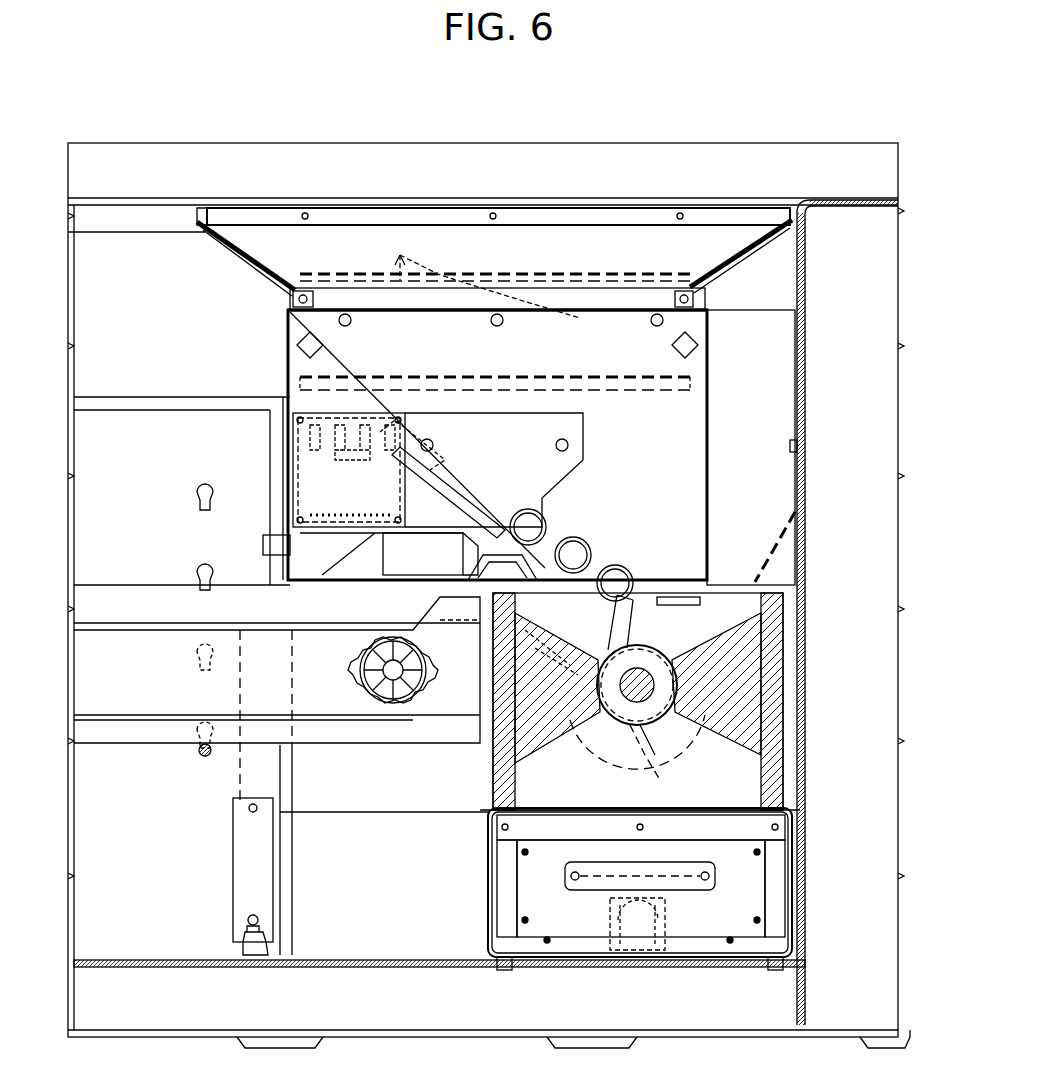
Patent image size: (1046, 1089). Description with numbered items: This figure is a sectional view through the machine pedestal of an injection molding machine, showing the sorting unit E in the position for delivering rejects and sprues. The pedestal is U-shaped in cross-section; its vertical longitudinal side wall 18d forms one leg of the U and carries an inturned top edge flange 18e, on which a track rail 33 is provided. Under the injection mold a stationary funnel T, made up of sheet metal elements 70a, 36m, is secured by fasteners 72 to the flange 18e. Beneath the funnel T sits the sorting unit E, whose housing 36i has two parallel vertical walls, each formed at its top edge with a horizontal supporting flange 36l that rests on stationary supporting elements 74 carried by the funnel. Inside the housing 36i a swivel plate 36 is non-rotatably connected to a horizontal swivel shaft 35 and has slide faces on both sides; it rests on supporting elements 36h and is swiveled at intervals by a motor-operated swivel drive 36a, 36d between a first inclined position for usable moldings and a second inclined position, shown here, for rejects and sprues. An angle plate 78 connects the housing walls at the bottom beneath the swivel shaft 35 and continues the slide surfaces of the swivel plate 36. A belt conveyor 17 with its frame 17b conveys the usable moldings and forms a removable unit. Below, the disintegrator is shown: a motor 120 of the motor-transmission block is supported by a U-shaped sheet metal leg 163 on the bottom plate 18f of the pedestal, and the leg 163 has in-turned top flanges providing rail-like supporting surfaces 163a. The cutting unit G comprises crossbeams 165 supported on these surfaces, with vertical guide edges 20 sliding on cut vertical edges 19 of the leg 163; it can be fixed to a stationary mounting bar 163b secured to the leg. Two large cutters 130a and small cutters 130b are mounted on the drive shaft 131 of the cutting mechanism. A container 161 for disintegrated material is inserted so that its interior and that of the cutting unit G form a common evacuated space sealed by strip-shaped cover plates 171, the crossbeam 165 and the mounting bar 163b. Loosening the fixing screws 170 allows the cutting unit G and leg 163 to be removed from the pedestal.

The track rail 33 is at (780, 162).
The top edge flange 18e is at (136, 222).
The funnel T is at (258, 220).
The fastener 72 is at (307, 212).
The sheet metal element 36m is at (762, 242).
The supporting flange 36l is at (336, 318).
The supporting element 74 is at (501, 277).
The sheet metal element 70a is at (497, 269).
The supporting element 36h is at (300, 340).
The swivel plate 36 is at (300, 380).
The swivel drive 36d is at (462, 470).
The swivel shaft 35 is at (545, 525).
The sorting unit E is at (712, 428).
The housing 36i is at (710, 446).
The swivel drive 36a is at (380, 556).
The angle plate 78 is at (583, 548).
The longitudinal side wall 18d is at (794, 447).
The large cutter 130a is at (615, 640).
The small cutter 130b is at (670, 686).
The frame 17b is at (277, 698).
The cutting unit G is at (495, 765).
The cut vertical edge 19 is at (527, 830).
The drive shaft 131 is at (652, 728).
The supporting surface 163a is at (775, 802).
The guide edge 20 is at (790, 811).
The belt conveyor 17 is at (140, 748).
The crossbeam 165 is at (490, 815).
The cover plate 171 is at (500, 838).
The motor 120 is at (325, 795).
The mounting bar 163b is at (500, 870).
The leg 163 is at (525, 895).
The container 161 is at (600, 925).
The fixing screw 170 is at (795, 940).
The bottom plate 18f is at (340, 966).